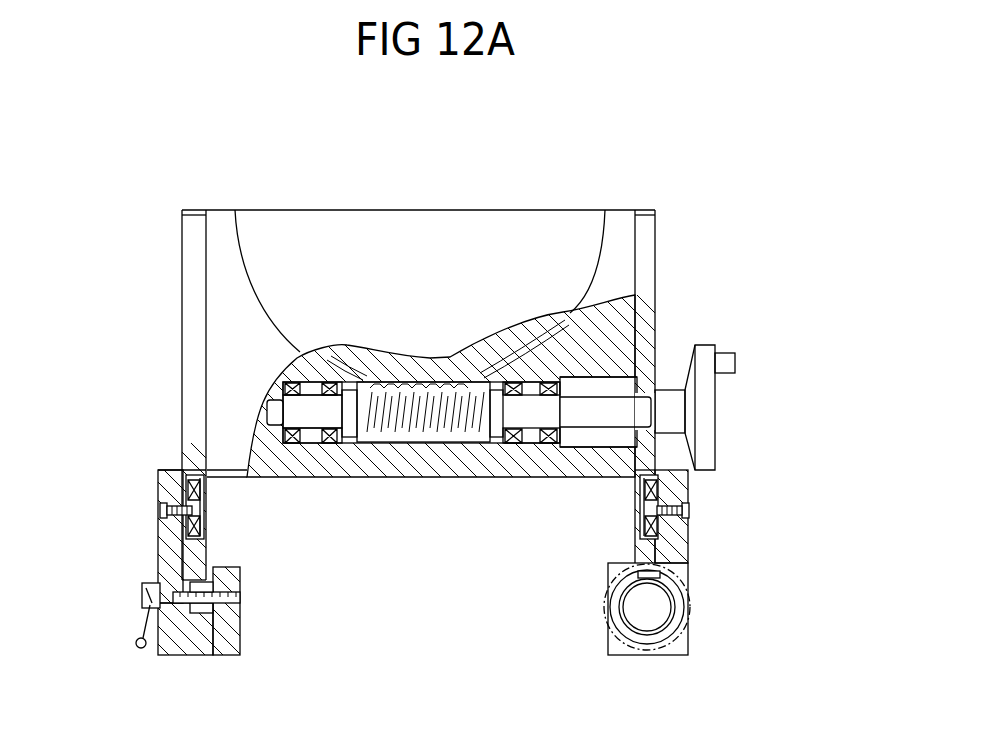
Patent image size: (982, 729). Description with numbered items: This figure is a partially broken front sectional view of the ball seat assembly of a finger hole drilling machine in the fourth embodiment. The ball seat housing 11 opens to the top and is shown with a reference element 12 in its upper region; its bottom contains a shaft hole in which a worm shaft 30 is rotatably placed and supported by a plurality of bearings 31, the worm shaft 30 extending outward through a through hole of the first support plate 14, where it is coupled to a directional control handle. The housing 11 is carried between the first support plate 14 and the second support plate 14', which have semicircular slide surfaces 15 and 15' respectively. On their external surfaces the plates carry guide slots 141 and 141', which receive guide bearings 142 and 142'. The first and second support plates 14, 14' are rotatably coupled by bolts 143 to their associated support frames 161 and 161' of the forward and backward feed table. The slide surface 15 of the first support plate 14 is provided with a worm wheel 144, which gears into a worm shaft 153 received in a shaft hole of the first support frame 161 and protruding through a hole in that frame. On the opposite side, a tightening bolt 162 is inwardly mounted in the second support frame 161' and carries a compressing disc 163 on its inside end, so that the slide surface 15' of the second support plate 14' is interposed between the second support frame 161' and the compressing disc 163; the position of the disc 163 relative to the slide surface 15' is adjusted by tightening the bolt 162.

The ball seat housing 11 is at (615, 238).
The table surface 12 is at (522, 232).
The first support plate 14 is at (677, 373).
The second support plate 14' is at (145, 395).
The semicircular slide surface 15 is at (526, 500).
The semicircular slide surface 15' is at (246, 608).
The worm shaft 30 is at (448, 447).
The bearings 31 is at (325, 445).
The guide slot 141 is at (612, 508).
The guide slot 141' is at (241, 508).
The guide bearing 142 is at (699, 507).
The guide bearing 142' is at (138, 499).
The bolts 143 is at (160, 511).
The worm wheel 144 is at (638, 573).
The worm shaft 153 is at (665, 620).
The first support frame 161 is at (725, 524).
The second support frame 161' is at (121, 536).
The tightening bolt 162 is at (135, 615).
The compressing disc 163 is at (230, 642).